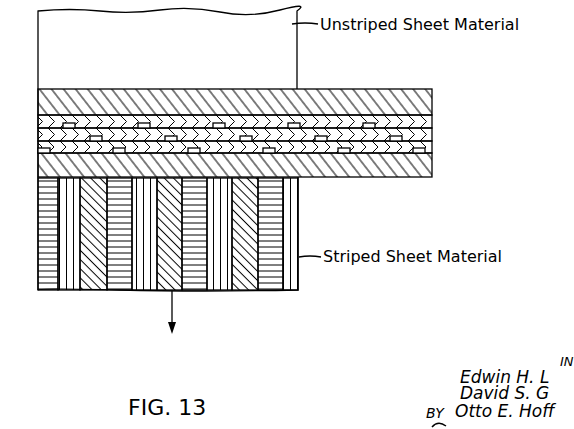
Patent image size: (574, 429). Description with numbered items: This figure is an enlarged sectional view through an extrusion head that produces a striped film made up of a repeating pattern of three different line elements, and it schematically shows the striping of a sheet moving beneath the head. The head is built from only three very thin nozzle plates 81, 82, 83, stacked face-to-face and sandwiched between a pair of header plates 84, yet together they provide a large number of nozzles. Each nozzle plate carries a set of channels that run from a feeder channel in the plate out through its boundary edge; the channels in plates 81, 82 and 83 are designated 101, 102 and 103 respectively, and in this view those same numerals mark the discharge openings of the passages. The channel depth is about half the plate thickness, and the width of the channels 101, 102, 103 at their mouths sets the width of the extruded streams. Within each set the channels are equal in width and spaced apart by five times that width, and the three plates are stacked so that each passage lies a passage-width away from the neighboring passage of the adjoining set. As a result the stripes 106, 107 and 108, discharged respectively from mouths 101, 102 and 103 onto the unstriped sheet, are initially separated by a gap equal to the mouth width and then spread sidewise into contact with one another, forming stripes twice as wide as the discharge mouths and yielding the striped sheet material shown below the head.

The nozzle plate 81 is at (432, 118).
The nozzle plate 82 is at (432, 132).
The nozzle plate 83 is at (432, 143).
The header plate 84 is at (432, 97).
The channels 101 is at (69, 123).
The channels 102 is at (96, 136).
The channels 103 is at (118, 148).
The stripe 106 is at (68, 291).
The stripe 107 is at (90, 291).
The stripe 108 is at (118, 291).